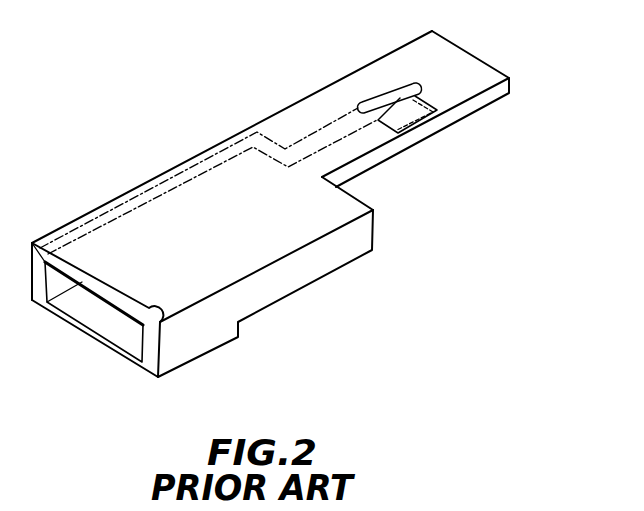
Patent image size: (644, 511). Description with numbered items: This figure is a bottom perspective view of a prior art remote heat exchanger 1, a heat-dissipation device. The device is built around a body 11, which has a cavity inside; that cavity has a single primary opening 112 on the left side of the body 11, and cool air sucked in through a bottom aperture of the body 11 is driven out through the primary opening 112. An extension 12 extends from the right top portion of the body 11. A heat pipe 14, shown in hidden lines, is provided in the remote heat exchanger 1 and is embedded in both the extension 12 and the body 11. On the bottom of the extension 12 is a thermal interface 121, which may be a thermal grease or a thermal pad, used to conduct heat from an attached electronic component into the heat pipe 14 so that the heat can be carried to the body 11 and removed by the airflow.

The remote heat exchanger 1 is at (180, 98).
The body 11 is at (282, 285).
The primary opening 112 is at (87, 317).
The extension 12 is at (439, 123).
The thermal interface 121 is at (379, 95).
The heat pipe 14 is at (337, 129).